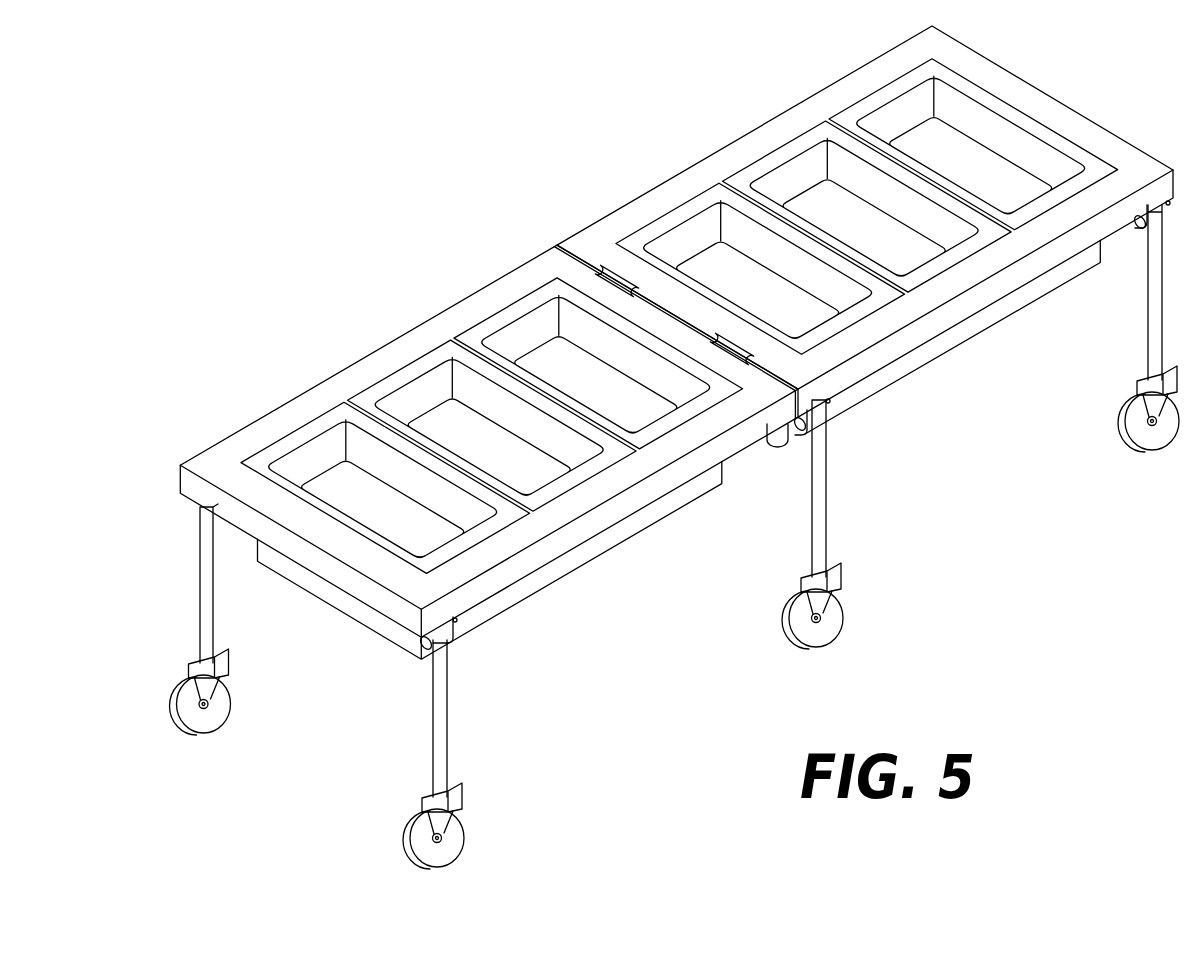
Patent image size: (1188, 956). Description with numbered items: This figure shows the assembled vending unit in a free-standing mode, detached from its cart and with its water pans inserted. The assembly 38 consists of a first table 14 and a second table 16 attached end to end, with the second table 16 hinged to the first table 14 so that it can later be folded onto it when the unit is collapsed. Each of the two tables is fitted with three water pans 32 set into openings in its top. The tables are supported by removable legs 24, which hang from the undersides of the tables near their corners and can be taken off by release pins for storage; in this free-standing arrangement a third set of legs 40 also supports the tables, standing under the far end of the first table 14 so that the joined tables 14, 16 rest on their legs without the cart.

The cart assembly 38 is at (447, 98).
The first table 14 is at (668, 195).
The second table 16 is at (470, 310).
The water pans 32 is at (882, 237).
The removable legs 24 is at (812, 528).
The third set of legs 40 is at (1153, 333).